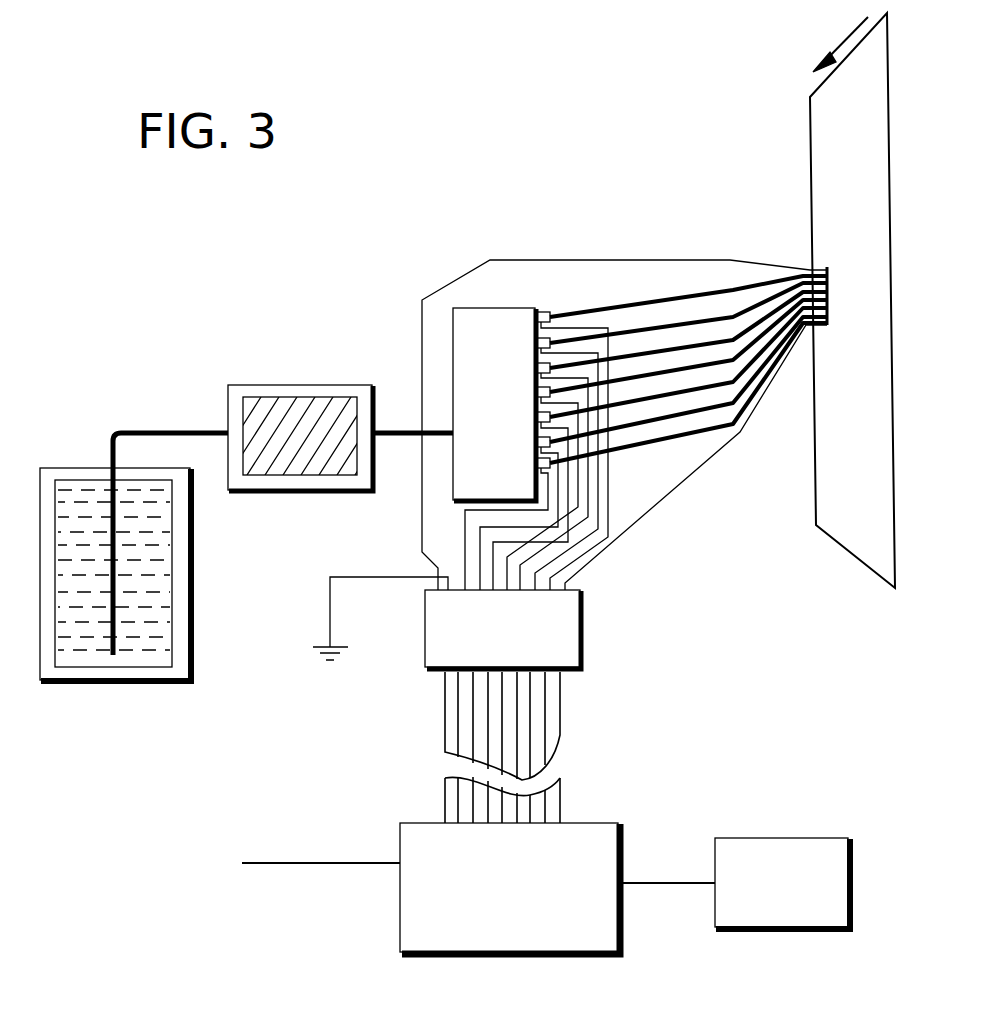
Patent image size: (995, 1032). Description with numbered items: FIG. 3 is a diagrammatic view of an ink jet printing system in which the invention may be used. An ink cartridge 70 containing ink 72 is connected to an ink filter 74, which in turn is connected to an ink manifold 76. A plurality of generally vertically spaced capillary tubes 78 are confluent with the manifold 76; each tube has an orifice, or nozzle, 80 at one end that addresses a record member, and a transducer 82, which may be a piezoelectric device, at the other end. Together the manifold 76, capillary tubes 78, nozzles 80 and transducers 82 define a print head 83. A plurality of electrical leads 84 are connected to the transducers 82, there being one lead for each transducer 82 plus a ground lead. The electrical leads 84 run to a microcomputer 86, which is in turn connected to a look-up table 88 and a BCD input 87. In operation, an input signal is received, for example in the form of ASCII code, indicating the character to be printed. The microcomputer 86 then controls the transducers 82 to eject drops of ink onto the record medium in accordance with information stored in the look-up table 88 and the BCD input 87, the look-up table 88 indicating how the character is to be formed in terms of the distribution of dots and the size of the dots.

The ink cartridge 70 is at (180, 615).
The ink 72 is at (83, 642).
The ink filter 74 is at (320, 402).
The ink manifold 76 is at (457, 328).
The capillary tubes 78 is at (648, 350).
The nozzles 80 is at (806, 265).
The transducers 82 is at (518, 307).
The print head 83 is at (660, 260).
The electrical leads 84 is at (445, 702).
The microcomputer 86 is at (413, 922).
The BCD input 87 is at (327, 863).
The look-up table 88 is at (752, 837).